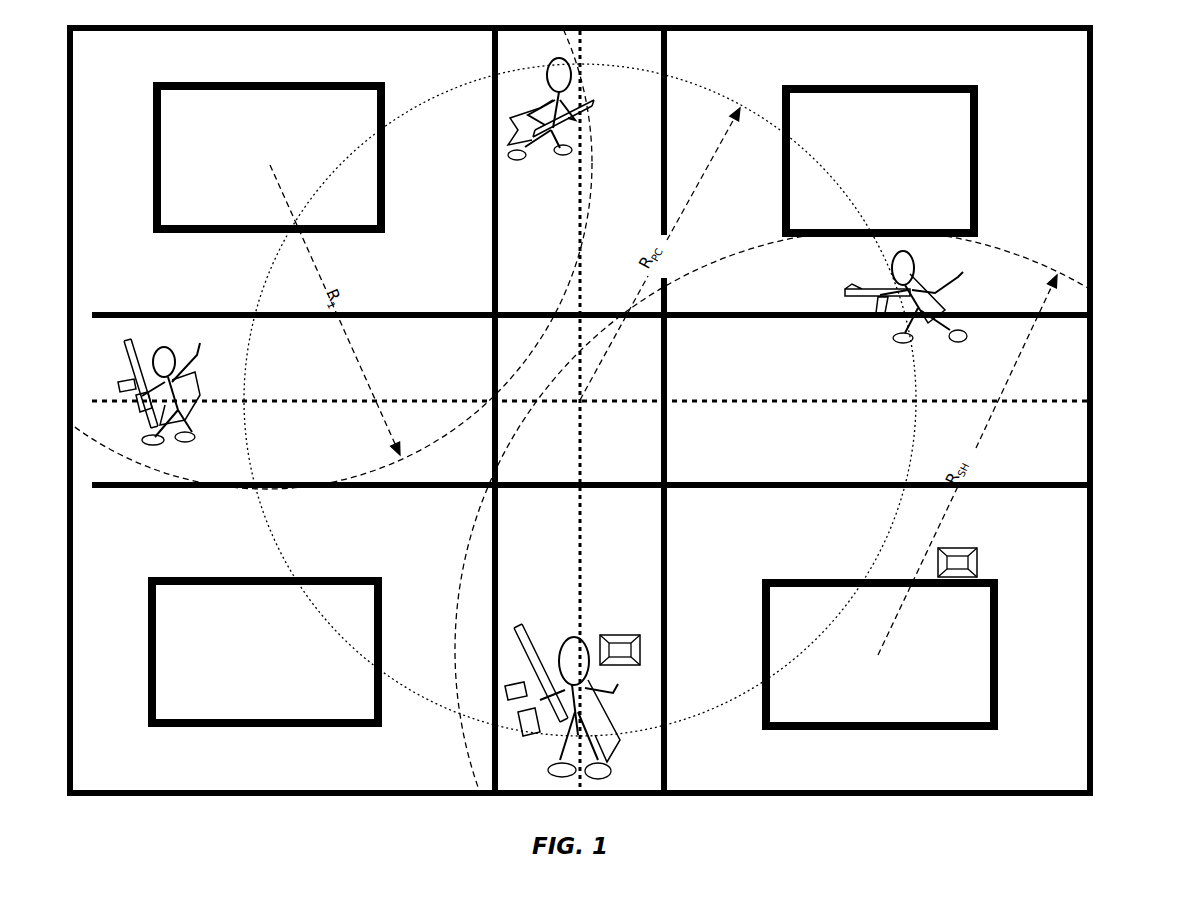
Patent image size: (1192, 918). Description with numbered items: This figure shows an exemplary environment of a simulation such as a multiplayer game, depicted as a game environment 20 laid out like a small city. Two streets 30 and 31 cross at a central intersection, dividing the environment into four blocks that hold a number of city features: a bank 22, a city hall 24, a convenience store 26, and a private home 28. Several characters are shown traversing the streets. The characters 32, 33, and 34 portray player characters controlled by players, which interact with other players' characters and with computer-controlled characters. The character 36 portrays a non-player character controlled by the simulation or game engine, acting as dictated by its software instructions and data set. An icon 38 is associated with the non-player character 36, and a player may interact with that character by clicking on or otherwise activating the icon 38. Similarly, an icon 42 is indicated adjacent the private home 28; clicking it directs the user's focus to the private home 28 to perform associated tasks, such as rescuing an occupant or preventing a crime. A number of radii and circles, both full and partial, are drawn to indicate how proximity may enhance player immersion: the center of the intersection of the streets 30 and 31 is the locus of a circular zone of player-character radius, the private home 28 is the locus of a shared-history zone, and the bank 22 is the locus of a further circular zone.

The game environment 20 is at (1118, 75).
The bank 22 is at (386, 158).
The city hall 24 is at (978, 160).
The convenience store 26 is at (383, 655).
The private home 28 is at (998, 653).
The street 30 is at (668, 583).
The street 31 is at (883, 492).
The character 32 is at (170, 393).
The character 33 is at (548, 96).
The character 34 is at (921, 297).
The non-player character 36 is at (557, 642).
The icon 38 is at (640, 650).
The icon 42 is at (977, 563).